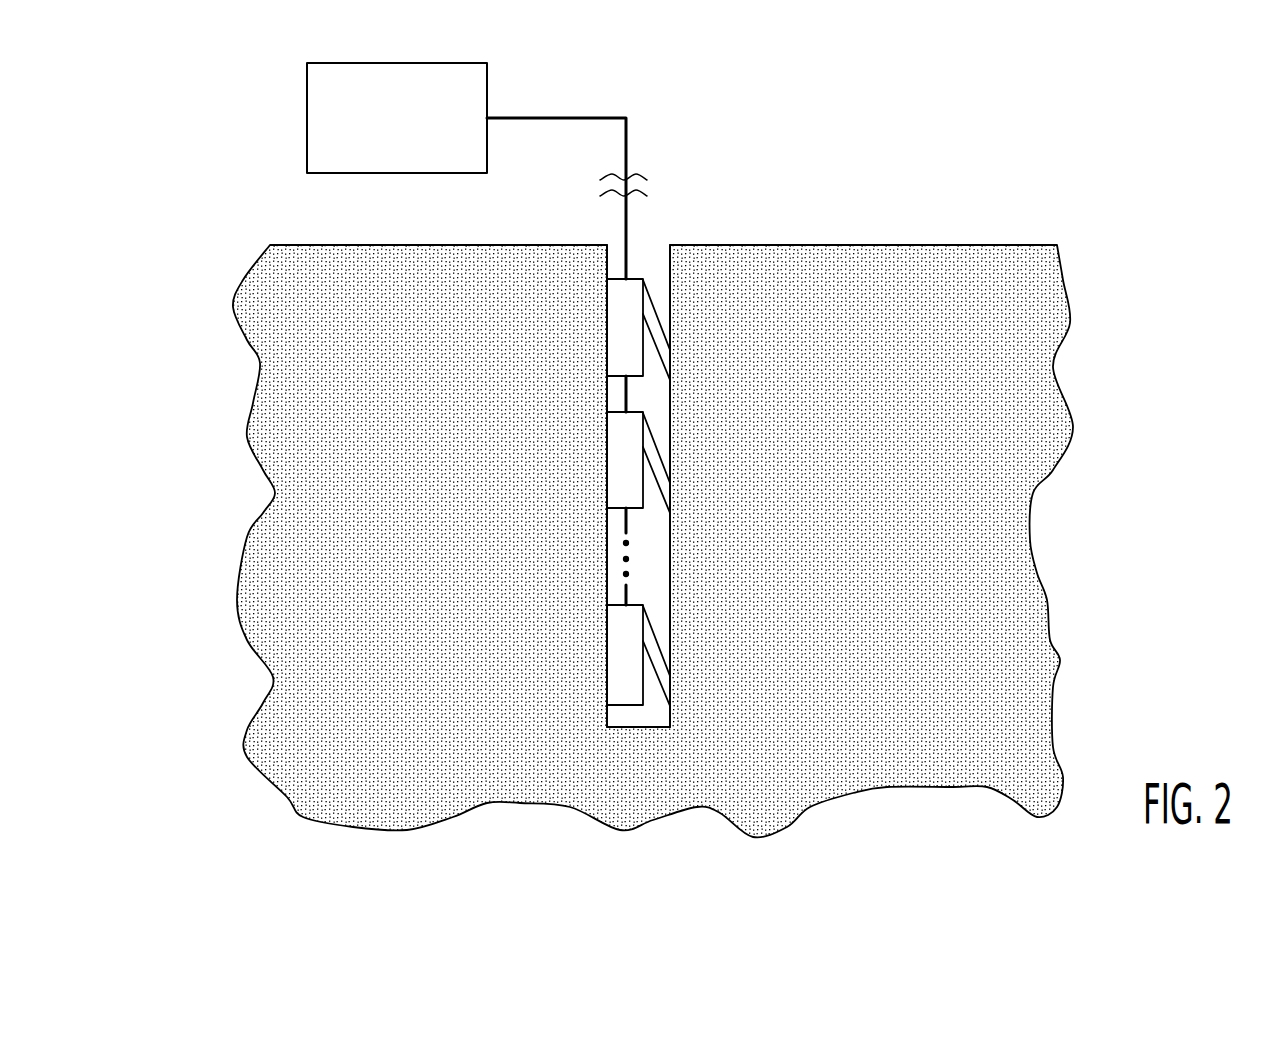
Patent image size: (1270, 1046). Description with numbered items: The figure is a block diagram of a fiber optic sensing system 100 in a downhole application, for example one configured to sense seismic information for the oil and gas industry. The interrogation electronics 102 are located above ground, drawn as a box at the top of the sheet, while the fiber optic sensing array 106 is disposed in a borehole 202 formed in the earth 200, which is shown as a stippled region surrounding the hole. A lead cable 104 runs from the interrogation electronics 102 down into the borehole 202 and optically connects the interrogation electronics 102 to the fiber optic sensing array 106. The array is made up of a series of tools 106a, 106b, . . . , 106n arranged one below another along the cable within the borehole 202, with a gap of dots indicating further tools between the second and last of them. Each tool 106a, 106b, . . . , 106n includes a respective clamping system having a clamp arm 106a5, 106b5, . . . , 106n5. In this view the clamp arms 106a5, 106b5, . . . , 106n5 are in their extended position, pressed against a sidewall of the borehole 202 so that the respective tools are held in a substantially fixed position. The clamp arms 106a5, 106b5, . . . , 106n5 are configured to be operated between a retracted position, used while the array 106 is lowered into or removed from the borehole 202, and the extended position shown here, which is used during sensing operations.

The fiber optic sensing system 100 is at (648, 119).
The interrogation electronics 102 is at (307, 117).
The lead cable 104 is at (625, 145).
The fiber optic sensing array 106 is at (644, 567).
The tool 106a is at (615, 318).
The tool 106b is at (615, 442).
The tool 106n is at (615, 647).
The clamp arm 106a5 is at (660, 330).
The clamp arm 106b5 is at (658, 460).
The clamp arm 106n5 is at (655, 657).
The earth 200 is at (980, 732).
The borehole 202 is at (670, 265).